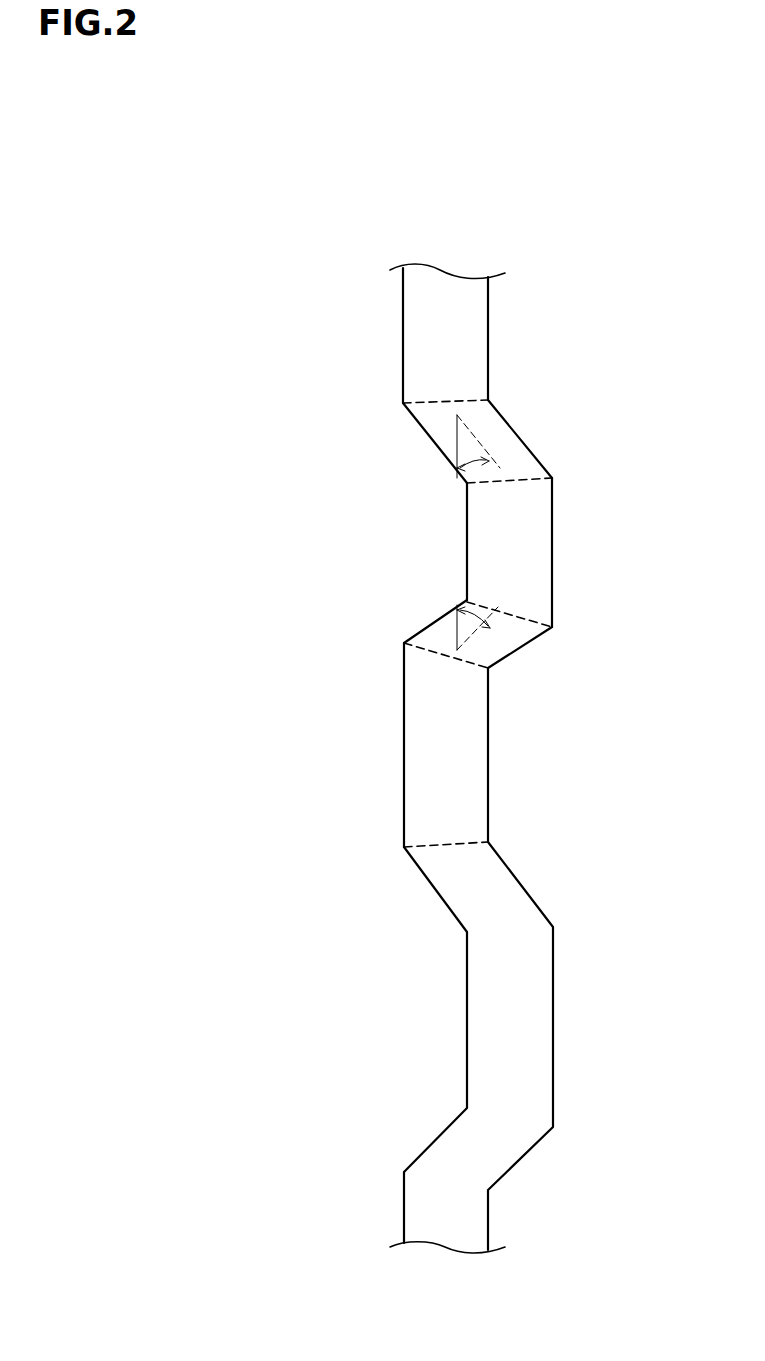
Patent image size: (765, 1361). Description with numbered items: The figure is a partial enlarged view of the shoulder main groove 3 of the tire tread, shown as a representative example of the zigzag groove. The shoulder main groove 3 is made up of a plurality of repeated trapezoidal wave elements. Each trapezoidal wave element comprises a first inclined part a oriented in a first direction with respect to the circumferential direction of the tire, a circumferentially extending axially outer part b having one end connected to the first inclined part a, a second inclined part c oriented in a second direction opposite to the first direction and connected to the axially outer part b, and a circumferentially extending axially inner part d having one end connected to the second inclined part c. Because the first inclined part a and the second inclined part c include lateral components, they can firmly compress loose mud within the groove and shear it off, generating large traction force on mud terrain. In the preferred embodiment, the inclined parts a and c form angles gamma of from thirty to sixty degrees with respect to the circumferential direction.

The shoulder main groove 3 is at (523, 715).
The first inclined part a is at (500, 445).
The axially outer part b is at (523, 545).
The second inclined part c is at (498, 645).
The axially inner part d is at (467, 765).